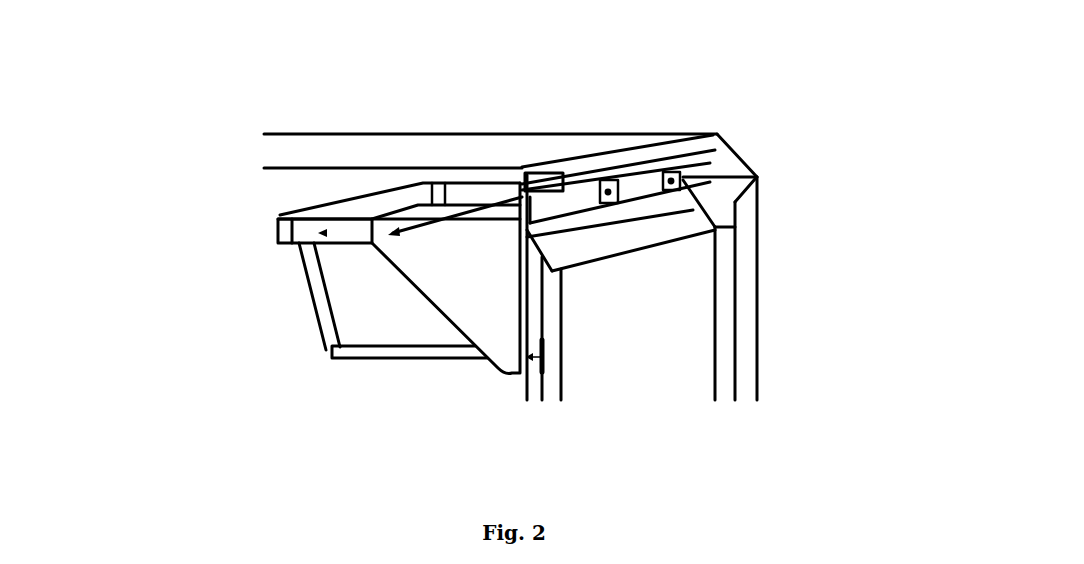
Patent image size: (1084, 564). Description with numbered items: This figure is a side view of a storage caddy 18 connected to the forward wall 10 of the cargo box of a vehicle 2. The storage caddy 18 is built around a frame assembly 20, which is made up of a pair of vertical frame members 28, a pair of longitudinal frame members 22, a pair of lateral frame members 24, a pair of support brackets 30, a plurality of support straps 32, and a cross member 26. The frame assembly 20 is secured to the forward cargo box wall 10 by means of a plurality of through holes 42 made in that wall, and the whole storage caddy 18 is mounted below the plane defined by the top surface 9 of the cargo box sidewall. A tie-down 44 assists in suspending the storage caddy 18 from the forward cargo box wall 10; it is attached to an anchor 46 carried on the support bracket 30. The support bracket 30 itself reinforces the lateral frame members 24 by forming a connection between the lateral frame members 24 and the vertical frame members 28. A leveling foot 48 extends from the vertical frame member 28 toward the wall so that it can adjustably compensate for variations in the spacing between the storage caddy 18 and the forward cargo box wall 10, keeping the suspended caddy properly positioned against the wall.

The vehicle 2 is at (625, 91).
The sidewall top surface 9 is at (528, 160).
The forward cargo box wall 10 is at (652, 263).
The storage caddy 18 is at (193, 280).
The frame assembly 20 is at (387, 288).
The longitudinal frame members 22 is at (278, 233).
The lateral frame members 24 is at (338, 232).
The cross member 26 is at (428, 208).
The vertical frame members 28 is at (527, 292).
The support bracket 30 is at (467, 280).
The support straps 32 is at (296, 250).
The through holes 42 is at (670, 179).
The tie-down 44 is at (488, 197).
The anchor 46 is at (389, 231).
The leveling foot 48 is at (530, 382).